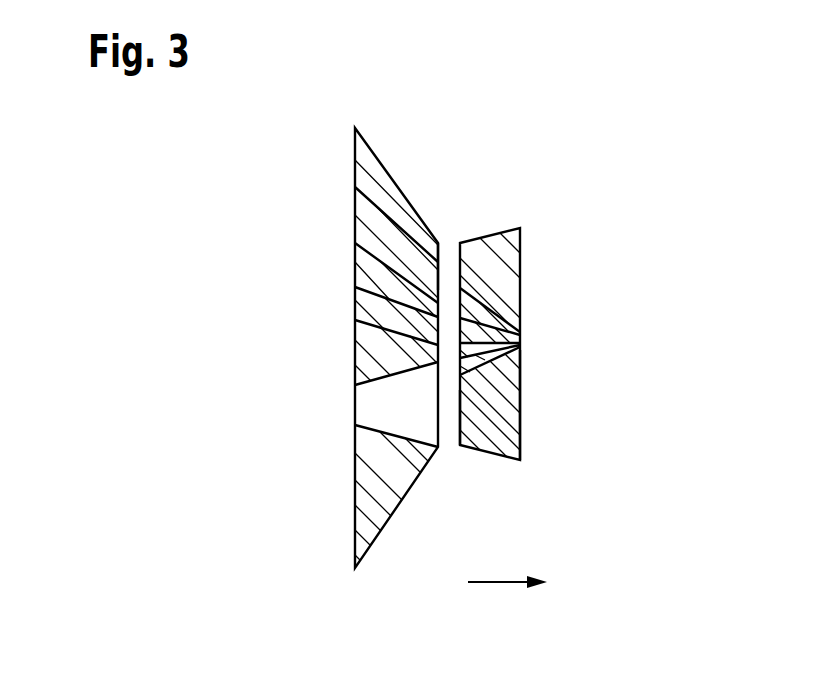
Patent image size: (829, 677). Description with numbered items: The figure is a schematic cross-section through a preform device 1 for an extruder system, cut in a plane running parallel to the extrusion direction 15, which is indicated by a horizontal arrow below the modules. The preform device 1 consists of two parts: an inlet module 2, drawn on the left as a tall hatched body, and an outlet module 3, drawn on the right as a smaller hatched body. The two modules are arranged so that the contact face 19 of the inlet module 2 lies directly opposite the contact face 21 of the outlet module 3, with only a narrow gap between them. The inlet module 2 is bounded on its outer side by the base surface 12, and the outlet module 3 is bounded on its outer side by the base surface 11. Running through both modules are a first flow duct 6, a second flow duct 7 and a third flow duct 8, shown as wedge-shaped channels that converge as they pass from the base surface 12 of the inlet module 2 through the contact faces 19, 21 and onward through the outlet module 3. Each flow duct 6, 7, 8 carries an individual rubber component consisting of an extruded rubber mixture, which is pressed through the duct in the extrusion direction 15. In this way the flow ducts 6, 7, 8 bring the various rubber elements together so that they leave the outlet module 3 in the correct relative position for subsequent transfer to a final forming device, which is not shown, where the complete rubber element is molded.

The preform device 1 is at (613, 147).
The inlet module 2 is at (316, 145).
The outlet module 3 is at (568, 248).
The first flow duct 6 is at (368, 221).
The second flow duct 7 is at (376, 310).
The third flow duct 8 is at (376, 402).
The base surface of outlet module 11 is at (520, 435).
The base surface of inlet module 12 is at (355, 500).
The extrusion direction 15 is at (503, 583).
The contact face of inlet module 19 is at (441, 266).
The contact face of outlet module 21 is at (457, 411).